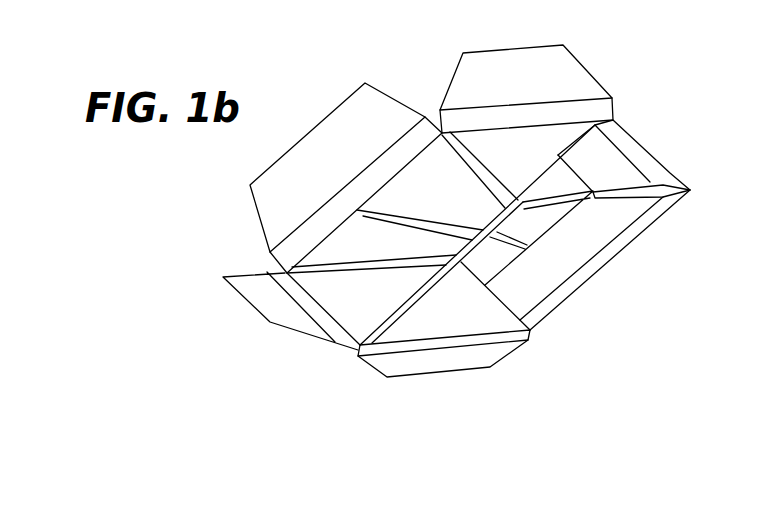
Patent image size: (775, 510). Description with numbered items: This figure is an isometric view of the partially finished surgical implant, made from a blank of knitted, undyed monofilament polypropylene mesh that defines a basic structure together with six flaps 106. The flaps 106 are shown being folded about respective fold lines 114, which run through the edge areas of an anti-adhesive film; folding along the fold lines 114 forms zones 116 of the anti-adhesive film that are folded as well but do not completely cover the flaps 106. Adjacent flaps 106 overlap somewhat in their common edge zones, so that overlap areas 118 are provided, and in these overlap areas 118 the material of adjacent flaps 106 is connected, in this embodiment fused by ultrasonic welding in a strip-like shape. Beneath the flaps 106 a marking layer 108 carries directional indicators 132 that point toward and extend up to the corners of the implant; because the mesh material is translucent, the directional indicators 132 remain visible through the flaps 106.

The flap 106 is at (327, 148).
The marking layer 108 is at (445, 220).
The fold line 114 is at (583, 120).
The zone of the anti-adhesive film 116 is at (625, 244).
The overlap area 118 is at (647, 188).
The directional indicator 132 is at (493, 170).